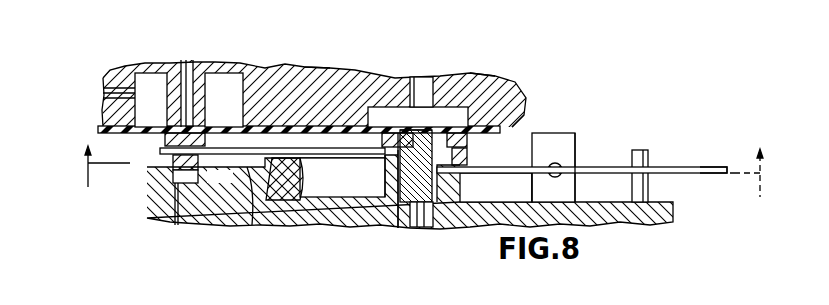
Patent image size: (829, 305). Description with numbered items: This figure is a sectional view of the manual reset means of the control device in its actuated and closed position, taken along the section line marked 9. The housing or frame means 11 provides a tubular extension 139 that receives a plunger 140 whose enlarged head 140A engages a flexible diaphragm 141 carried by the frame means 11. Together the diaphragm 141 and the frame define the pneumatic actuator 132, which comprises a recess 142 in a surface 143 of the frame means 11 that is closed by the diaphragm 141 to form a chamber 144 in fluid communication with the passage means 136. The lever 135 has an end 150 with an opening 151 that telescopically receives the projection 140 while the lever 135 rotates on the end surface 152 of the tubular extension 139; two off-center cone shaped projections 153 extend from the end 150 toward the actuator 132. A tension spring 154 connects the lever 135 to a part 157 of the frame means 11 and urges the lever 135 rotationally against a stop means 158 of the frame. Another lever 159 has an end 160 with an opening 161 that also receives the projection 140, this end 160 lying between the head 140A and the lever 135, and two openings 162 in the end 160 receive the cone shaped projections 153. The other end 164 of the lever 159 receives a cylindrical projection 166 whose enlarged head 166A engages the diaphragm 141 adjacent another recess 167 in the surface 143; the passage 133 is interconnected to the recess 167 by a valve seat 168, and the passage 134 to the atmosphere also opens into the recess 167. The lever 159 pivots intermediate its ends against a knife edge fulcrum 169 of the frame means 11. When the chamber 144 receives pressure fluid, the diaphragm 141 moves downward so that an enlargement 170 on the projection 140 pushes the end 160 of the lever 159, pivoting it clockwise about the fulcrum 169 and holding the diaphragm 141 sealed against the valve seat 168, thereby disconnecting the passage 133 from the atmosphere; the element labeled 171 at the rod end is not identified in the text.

The frame means 11 is at (610, 217).
The pneumatic actuator 132 is at (510, 92).
The passage 133 is at (187, 60).
The passage to the atmosphere 134 is at (112, 103).
The lever 135 is at (604, 166).
The passage means 136 is at (427, 88).
The tubular extension 139 is at (463, 185).
The plunger 140 is at (418, 229).
The enlarged head 140A is at (400, 135).
The flexible diaphragm 141 is at (313, 126).
The recess 142 is at (396, 134).
The surface 143 is at (282, 126).
The chamber 144 is at (430, 118).
The end 150 is at (376, 205).
The opening 151 is at (424, 218).
The end surface 152 is at (398, 200).
The cone shaped projections 153 is at (372, 170).
The tension spring 154 is at (578, 157).
The part of the frame means 157 is at (567, 189).
The stop means 158 is at (650, 188).
The lever 159 is at (250, 225).
The end 160 is at (482, 140).
The opening 161 is at (463, 117).
The openings 162 is at (505, 120).
The other end 164 is at (166, 152).
The cylindrical projection 166 is at (173, 172).
The enlarged head 166A is at (165, 142).
The recess 167 is at (145, 76).
The valve seat 168 is at (205, 124).
The knife edge fulcrum 169 is at (305, 200).
The enlargement 170 is at (368, 126).
The rod end 171 is at (700, 170).
The section line 9- 9 is at (423, 171).